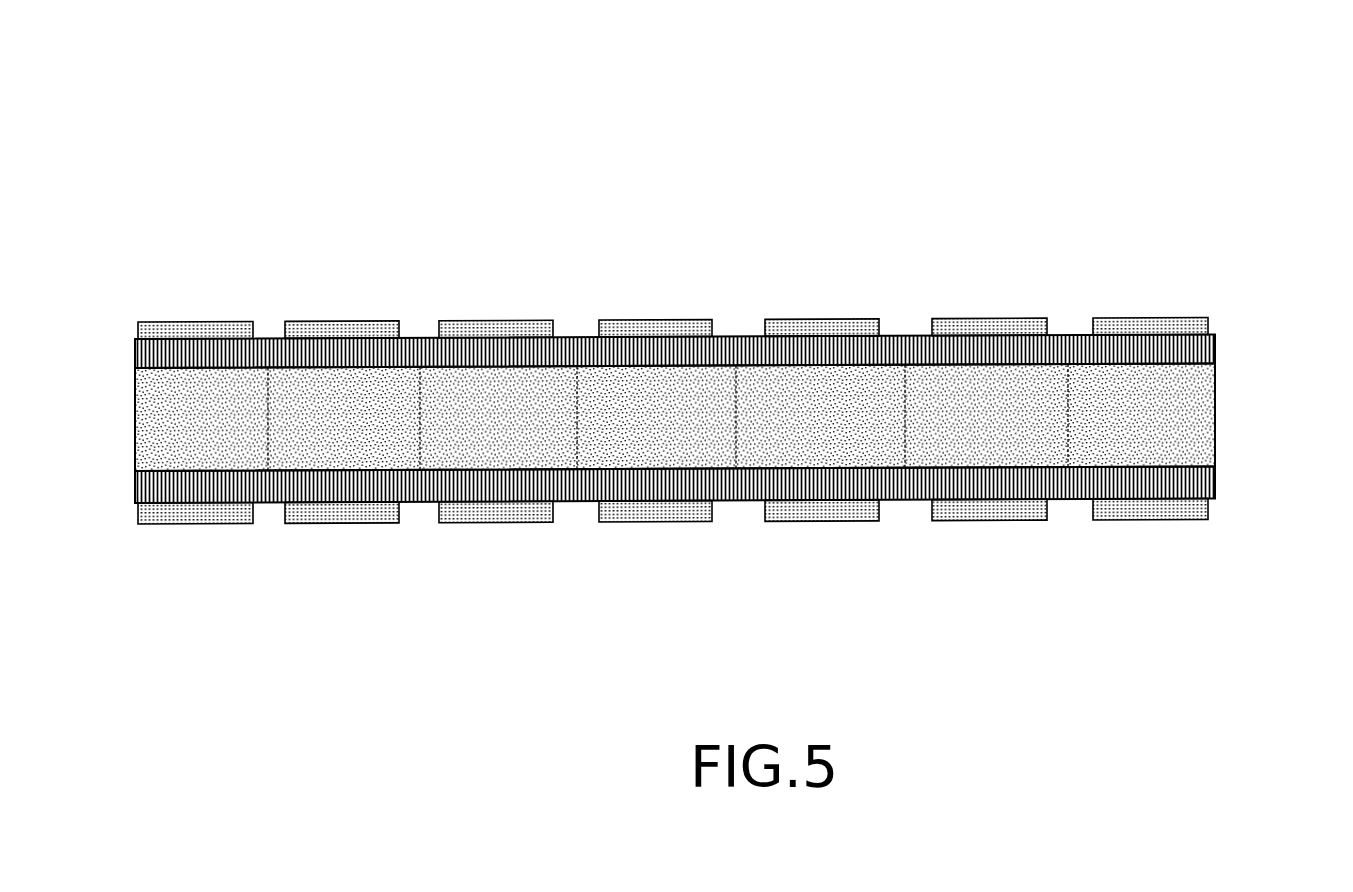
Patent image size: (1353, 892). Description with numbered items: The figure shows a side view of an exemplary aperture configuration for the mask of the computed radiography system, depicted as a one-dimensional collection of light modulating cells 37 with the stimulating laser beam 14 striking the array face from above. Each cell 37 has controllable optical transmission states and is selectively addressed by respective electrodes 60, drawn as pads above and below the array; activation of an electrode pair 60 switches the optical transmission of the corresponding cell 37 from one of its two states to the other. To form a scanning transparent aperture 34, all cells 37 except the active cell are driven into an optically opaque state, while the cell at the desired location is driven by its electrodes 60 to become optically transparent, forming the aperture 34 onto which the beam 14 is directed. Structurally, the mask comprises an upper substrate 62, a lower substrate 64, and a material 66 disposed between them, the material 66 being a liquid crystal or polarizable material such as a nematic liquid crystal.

The laser beam 14 is at (649, 310).
The positionable aperture 34 is at (656, 417).
The light modulating cells 37 is at (674, 417).
The electrodes 60 is at (1160, 327).
The upper substrate 62 is at (1187, 353).
The lower substrate 64 is at (1198, 490).
The material 66 is at (163, 412).